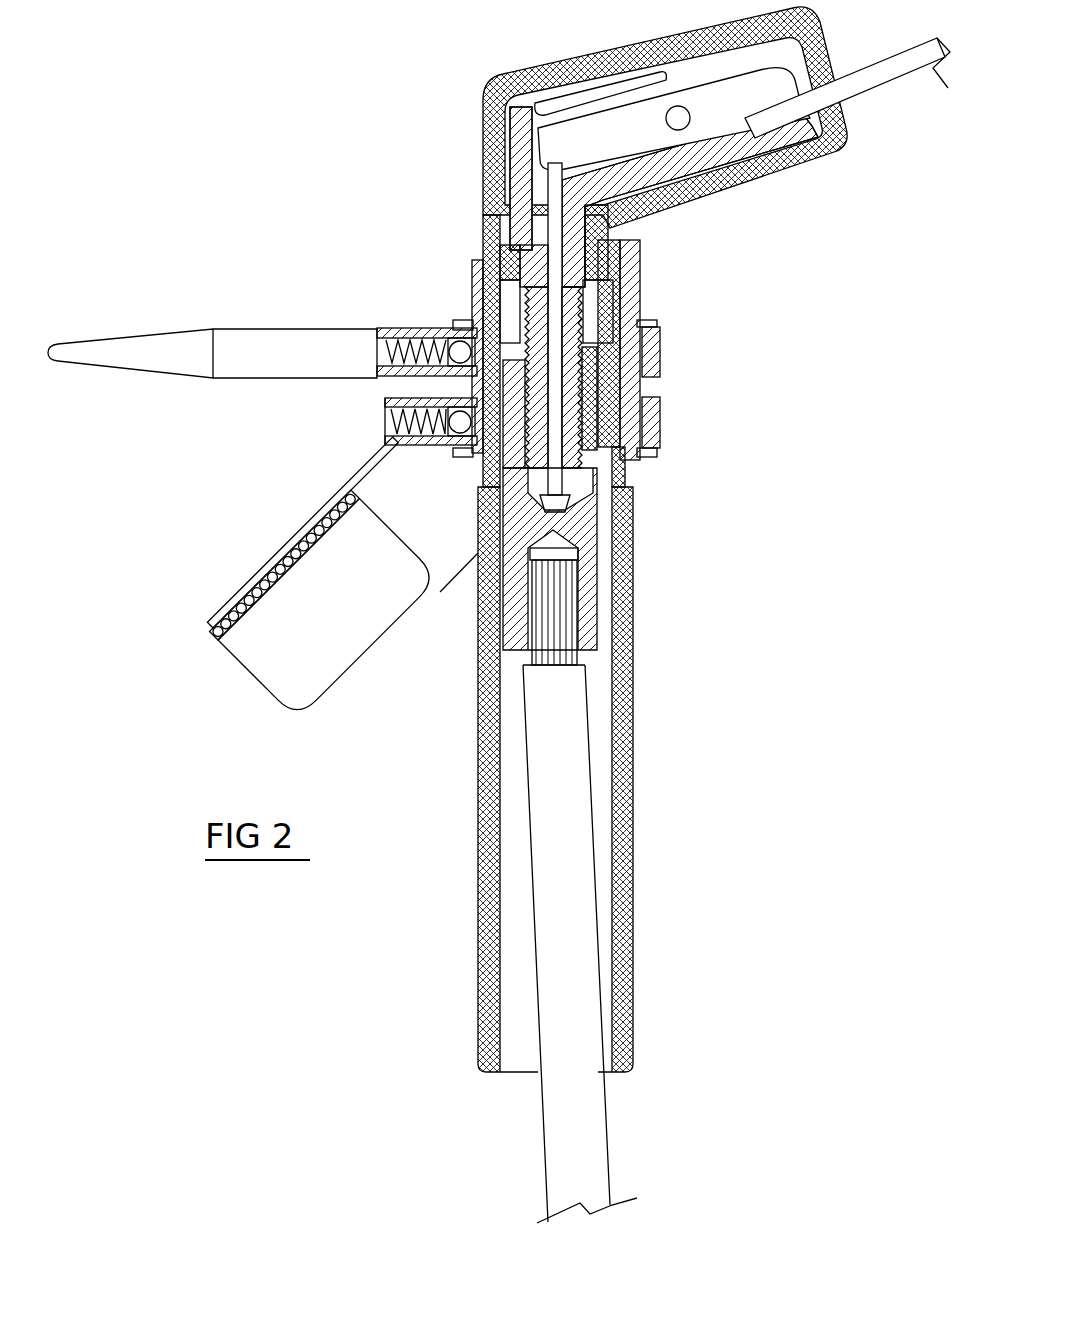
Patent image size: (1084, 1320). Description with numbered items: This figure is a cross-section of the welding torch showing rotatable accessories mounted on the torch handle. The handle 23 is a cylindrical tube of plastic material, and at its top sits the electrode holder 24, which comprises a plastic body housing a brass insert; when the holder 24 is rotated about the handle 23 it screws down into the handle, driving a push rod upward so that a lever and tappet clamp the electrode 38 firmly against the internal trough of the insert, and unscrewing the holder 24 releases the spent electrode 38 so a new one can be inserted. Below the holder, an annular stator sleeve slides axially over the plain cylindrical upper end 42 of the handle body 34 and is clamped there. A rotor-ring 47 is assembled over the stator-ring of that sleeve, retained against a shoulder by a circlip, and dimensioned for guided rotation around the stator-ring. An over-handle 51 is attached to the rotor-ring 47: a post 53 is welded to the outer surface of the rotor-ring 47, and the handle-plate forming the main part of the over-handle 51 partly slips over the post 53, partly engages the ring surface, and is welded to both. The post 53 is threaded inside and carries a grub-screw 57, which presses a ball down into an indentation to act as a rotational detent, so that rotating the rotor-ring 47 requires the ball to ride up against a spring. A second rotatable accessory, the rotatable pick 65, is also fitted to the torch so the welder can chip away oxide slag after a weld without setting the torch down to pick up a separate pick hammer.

The handle 23 is at (462, 813).
The electrode holder 24 is at (712, 198).
The handle body 34 is at (626, 762).
The electrode 38 is at (898, 80).
The plain cylindrical upper end 42 is at (622, 473).
The rotor-ring 47 is at (655, 415).
The over-handle 51 is at (290, 556).
The post 53 is at (395, 377).
The grub-screw 57 is at (395, 420).
The rotatable pick 65 is at (278, 342).